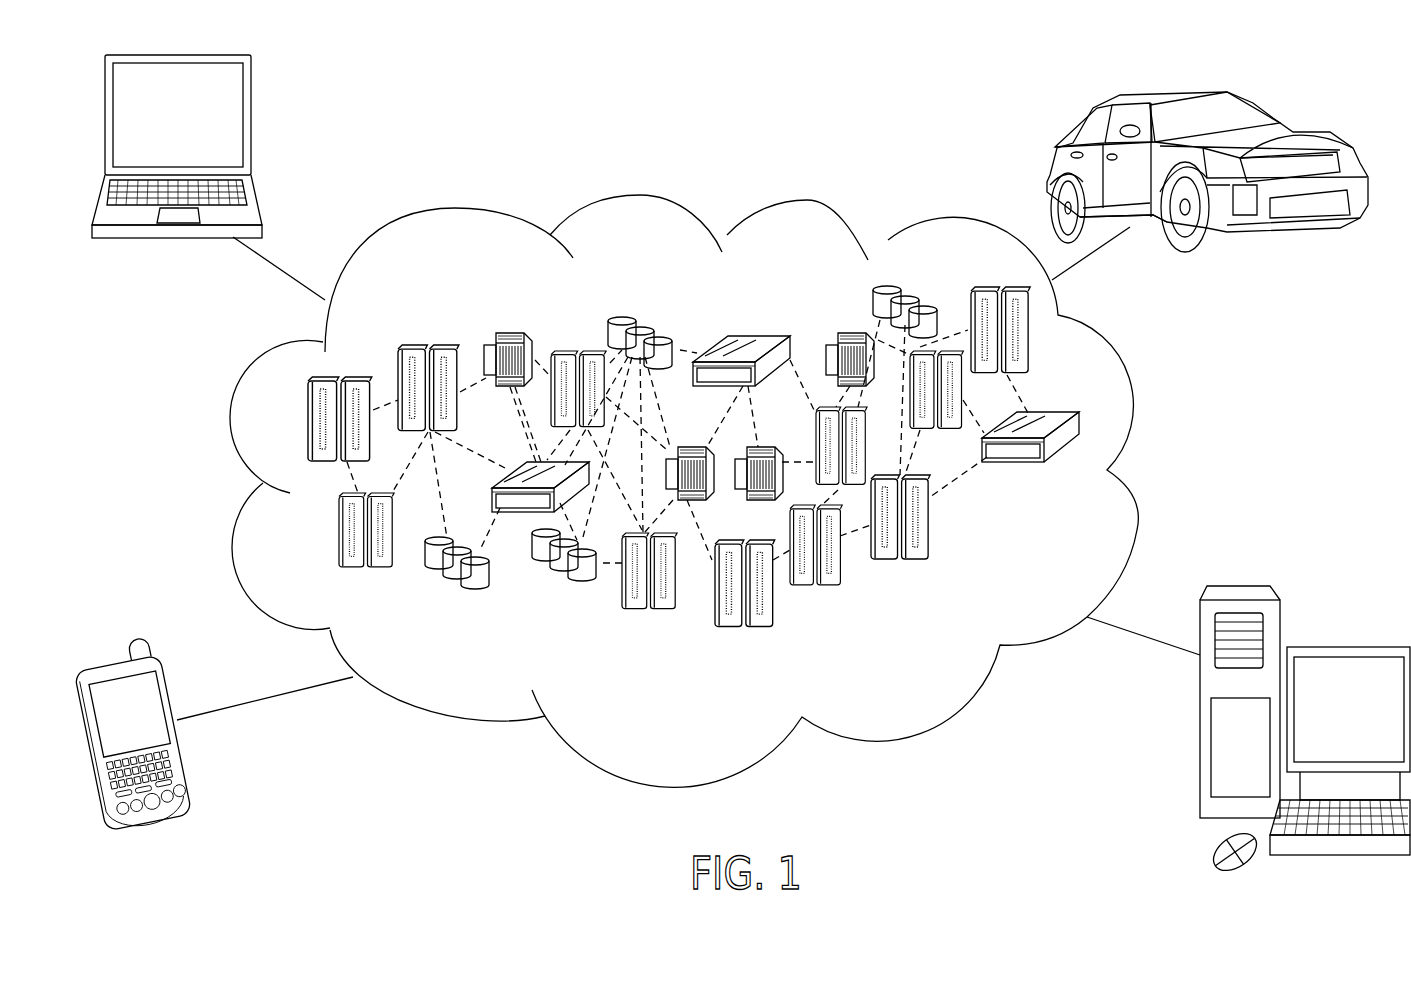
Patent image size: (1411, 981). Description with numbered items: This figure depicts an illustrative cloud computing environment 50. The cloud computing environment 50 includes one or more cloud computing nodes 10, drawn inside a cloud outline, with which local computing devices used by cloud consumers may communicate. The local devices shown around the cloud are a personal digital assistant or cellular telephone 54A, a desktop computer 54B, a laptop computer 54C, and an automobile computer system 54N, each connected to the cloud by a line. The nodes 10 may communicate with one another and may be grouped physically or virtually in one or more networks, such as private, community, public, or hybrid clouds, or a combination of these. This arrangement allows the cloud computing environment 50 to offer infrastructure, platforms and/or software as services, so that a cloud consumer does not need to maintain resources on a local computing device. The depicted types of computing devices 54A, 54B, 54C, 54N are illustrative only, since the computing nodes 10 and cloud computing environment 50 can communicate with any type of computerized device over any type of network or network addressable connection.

The cloud computing node 10 is at (1106, 490).
The cloud computing environment 50 is at (1133, 395).
The personal digital assistant or cellular telephone 54A is at (185, 757).
The desktop computer 54B is at (1350, 645).
The laptop computer 54C is at (251, 115).
The automobile computer system 54N is at (1050, 162).